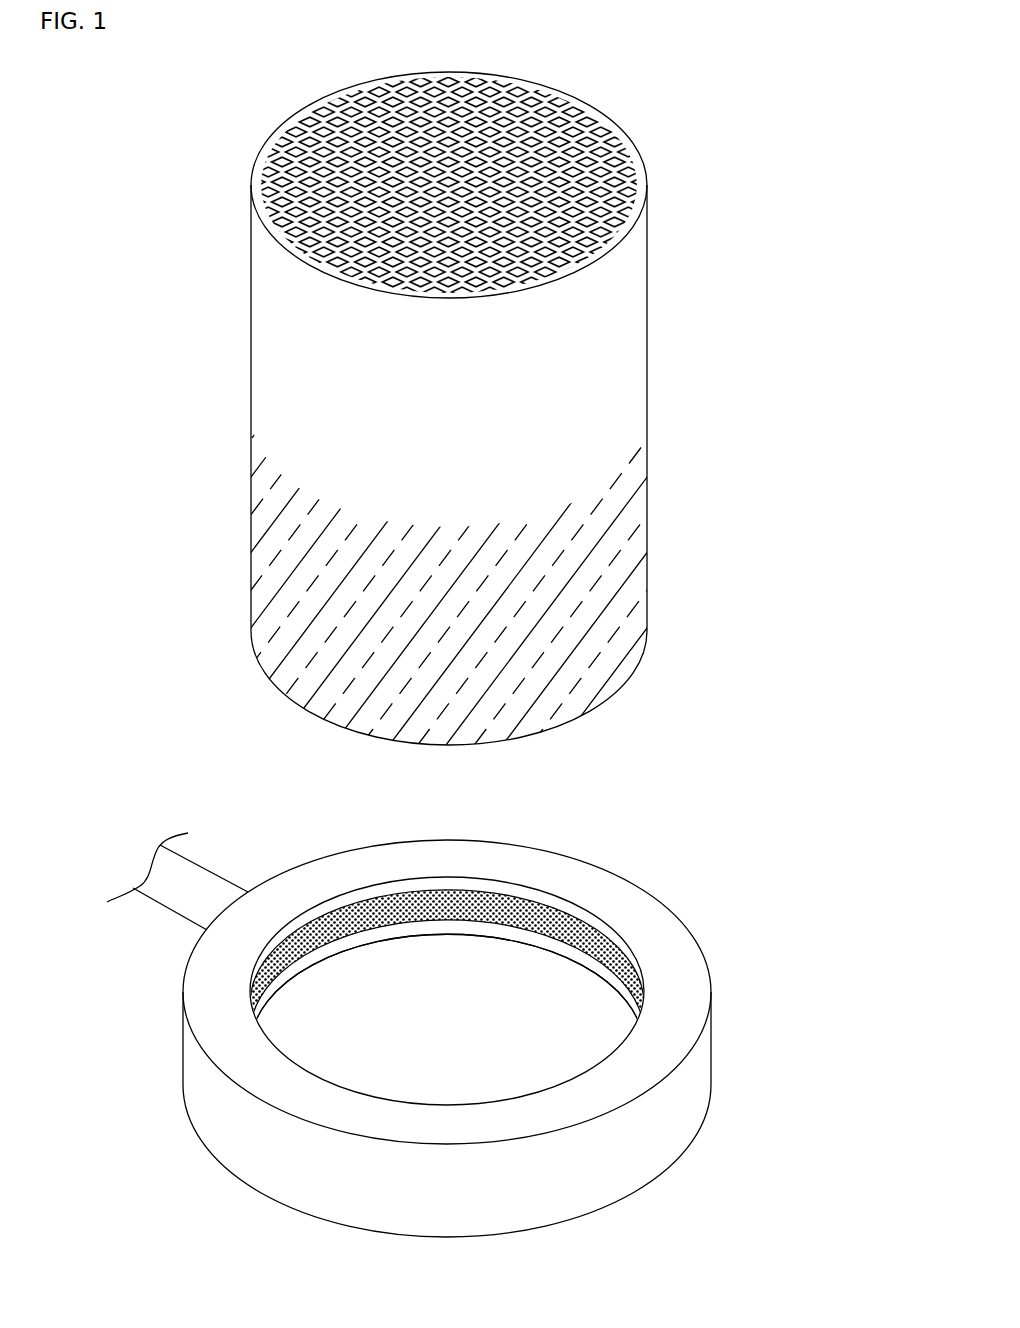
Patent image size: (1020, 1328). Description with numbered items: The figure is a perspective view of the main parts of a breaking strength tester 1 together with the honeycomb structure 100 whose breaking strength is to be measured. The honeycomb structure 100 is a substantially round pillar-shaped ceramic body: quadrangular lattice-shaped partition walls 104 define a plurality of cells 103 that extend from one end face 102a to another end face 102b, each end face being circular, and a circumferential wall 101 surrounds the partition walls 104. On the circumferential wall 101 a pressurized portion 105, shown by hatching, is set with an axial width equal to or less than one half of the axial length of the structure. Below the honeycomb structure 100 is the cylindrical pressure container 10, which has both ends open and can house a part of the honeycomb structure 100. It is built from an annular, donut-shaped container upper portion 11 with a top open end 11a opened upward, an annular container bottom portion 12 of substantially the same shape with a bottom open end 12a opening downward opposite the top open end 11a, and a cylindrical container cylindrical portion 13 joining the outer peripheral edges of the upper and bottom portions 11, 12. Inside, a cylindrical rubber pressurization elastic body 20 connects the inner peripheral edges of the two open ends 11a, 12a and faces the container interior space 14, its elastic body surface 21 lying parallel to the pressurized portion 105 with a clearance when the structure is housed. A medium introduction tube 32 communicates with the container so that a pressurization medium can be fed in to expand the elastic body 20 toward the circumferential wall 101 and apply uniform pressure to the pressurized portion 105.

The breaking strength tester 1 is at (225, 798).
The pressure container 10 is at (327, 838).
The container upper portion 11 is at (656, 920).
The top open end 11a is at (503, 884).
The container bottom portion 12 is at (446, 987).
The bottom open end 12a is at (529, 938).
The container cylindrical portion 13 is at (685, 1092).
The container interior space 14 is at (390, 1048).
The pressurization elastic body 20 is at (447, 954).
The elastic body surface 21 is at (443, 907).
The medium introduction tube 32 is at (182, 901).
The honeycomb structure 100 is at (196, 300).
The circumferential wall 101 is at (632, 383).
The one end face 102a is at (590, 706).
The another end face 102b is at (585, 106).
The cells 103 is at (538, 95).
The partition walls 104 is at (477, 88).
The pressurized portion 105 is at (632, 568).